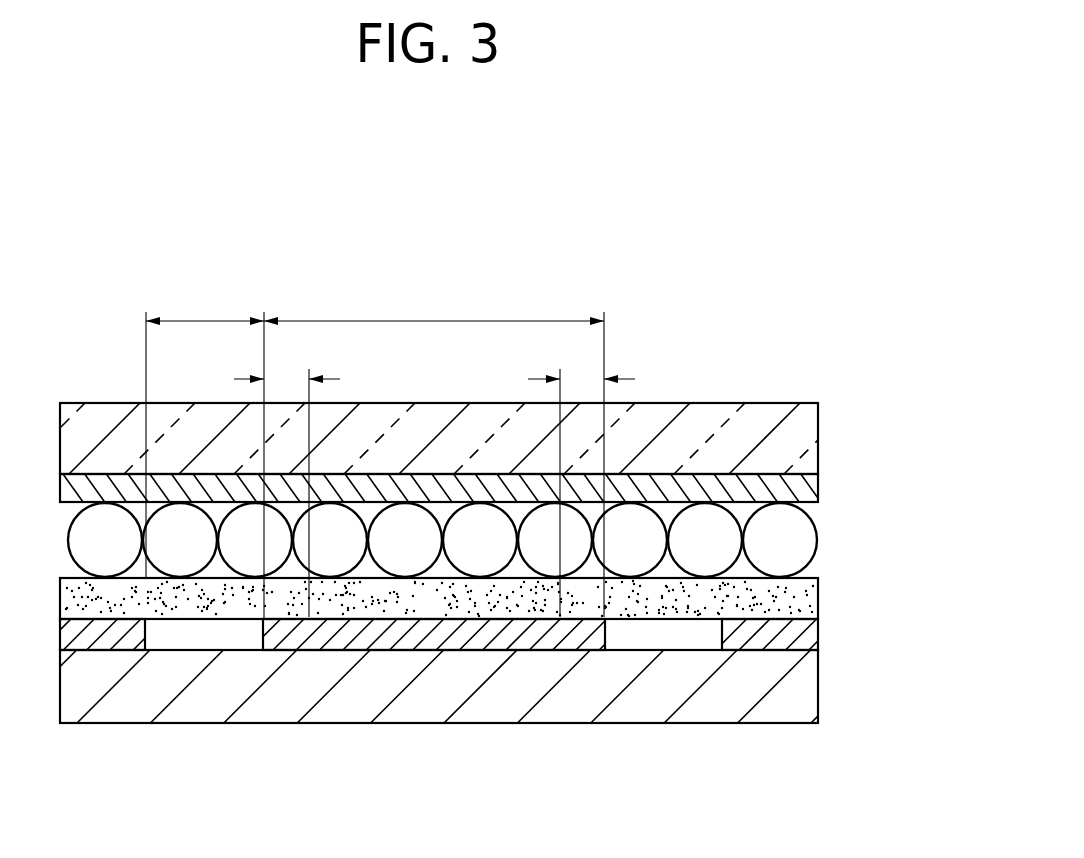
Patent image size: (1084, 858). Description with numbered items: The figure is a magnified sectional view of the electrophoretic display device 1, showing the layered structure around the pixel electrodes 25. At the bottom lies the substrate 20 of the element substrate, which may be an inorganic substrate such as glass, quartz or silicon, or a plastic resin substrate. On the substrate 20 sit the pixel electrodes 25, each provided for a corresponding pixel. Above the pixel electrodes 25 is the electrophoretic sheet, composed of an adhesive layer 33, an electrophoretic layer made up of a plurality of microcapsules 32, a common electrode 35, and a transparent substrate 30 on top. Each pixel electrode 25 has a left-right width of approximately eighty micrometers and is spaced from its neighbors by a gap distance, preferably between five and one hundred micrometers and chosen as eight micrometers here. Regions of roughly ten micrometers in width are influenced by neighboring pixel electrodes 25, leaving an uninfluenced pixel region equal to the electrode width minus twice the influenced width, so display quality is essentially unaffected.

The electrophoretic display device 1 is at (745, 285).
The substrate 20 is at (783, 708).
The pixel electrodes 25 is at (803, 633).
The transparent substrate 30 is at (90, 413).
The microcapsules 32 is at (803, 548).
The adhesive layer 33 is at (803, 598).
The common electrode 35 is at (803, 483).